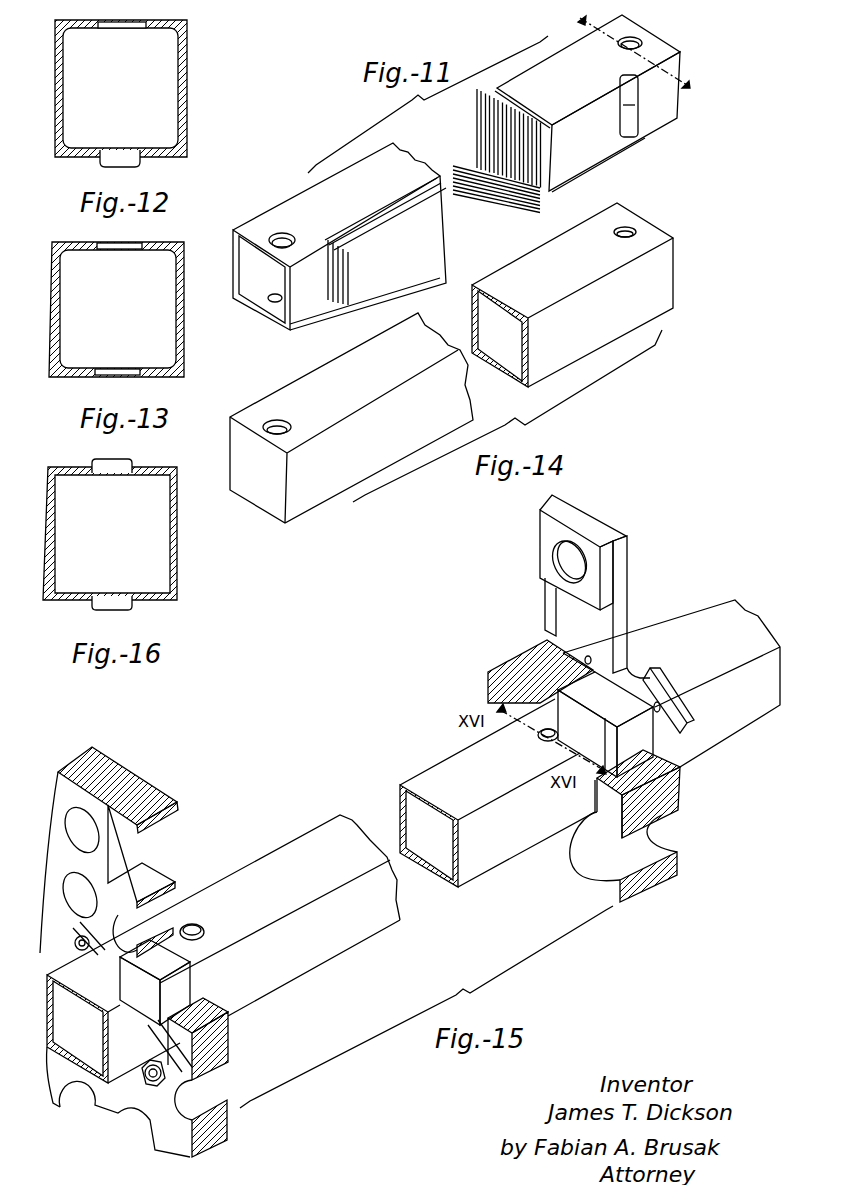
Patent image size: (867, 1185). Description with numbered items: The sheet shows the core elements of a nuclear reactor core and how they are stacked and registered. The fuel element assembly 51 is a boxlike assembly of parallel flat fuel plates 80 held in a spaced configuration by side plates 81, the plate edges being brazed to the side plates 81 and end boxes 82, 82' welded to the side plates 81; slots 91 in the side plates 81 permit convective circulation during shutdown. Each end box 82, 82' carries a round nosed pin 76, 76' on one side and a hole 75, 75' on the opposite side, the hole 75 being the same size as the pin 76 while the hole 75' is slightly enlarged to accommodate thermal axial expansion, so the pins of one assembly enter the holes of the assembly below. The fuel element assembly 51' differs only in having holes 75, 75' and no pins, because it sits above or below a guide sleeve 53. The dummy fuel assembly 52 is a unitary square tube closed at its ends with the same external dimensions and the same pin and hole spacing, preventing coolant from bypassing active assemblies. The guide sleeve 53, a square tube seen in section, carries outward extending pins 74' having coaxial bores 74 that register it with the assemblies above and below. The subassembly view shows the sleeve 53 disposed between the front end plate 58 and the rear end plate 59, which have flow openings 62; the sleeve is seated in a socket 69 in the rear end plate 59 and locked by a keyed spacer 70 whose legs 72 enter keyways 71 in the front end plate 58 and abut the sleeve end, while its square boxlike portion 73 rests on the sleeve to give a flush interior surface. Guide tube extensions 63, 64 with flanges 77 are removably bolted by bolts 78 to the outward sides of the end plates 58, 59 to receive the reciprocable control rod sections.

In FIG. 12, the fuel element assembly 51 is at (142, 88).
In FIG. 11, the fuel element assembly 51 is at (461, 172).
In FIG. 13, the fuel element assembly 51' is at (137, 309).
In FIG. 14, the dummy fuel assembly 52 is at (470, 280).
In FIG. 16, the guide sleeve 53 is at (178, 558).
In FIG. 15, the guide sleeve 53 is at (355, 817).
In FIG. 15, the front end plate 58 is at (677, 865).
In FIG. 15, the rear end plate 59 is at (130, 774).
In FIG. 15, the flow openings 62 is at (73, 880).
In FIG. 15, the guide tube extension 63 is at (698, 622).
In FIG. 15, the guide tube extension 64 is at (60, 975).
In FIG. 15, the socket 69 is at (200, 1000).
In FIG. 15, the keyed spacer 70 is at (604, 518).
In FIG. 15, the keyway 71 is at (584, 739).
In FIG. 15, the legs 72 is at (613, 628).
In FIG. 15, the square boxlike portion 73 is at (540, 537).
In FIG. 15, the bore 74 is at (207, 924).
In FIG. 16, the pin 74' is at (140, 535).
In FIG. 15, the pin 74' is at (527, 743).
In FIG. 12, the hole 75 is at (138, 14).
In FIG. 13, the hole 75 is at (141, 385).
In FIG. 11, the hole 75 is at (661, 31).
In FIG. 14, the hole 75 is at (610, 241).
In FIG. 13, the hole 75' is at (140, 232).
In FIG. 11, the hole 75' is at (306, 225).
In FIG. 14, the hole 75' is at (351, 418).
In FIG. 12, the round nosed pin 76 is at (141, 168).
In FIG. 11, the round nosed pin 76 is at (612, 100).
In FIG. 11, the round nosed pin 76' is at (264, 323).
In FIG. 15, the flange 77 is at (663, 678).
In FIG. 15, the bolt 78 is at (70, 942).
In FIG. 11, the fuel plate 80 is at (480, 150).
In FIG. 11, the side plate 81 is at (286, 208).
In FIG. 11, the end box 82 is at (615, 160).
In FIG. 11, the end box 82' is at (365, 310).
In FIG. 11, the slots 91 is at (400, 188).